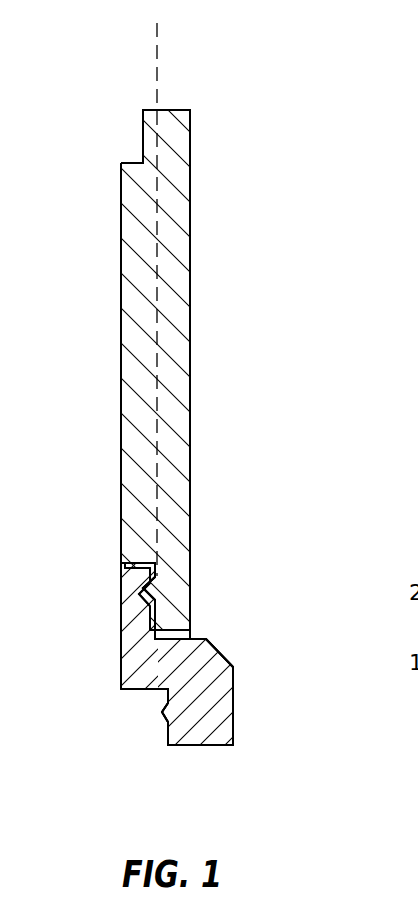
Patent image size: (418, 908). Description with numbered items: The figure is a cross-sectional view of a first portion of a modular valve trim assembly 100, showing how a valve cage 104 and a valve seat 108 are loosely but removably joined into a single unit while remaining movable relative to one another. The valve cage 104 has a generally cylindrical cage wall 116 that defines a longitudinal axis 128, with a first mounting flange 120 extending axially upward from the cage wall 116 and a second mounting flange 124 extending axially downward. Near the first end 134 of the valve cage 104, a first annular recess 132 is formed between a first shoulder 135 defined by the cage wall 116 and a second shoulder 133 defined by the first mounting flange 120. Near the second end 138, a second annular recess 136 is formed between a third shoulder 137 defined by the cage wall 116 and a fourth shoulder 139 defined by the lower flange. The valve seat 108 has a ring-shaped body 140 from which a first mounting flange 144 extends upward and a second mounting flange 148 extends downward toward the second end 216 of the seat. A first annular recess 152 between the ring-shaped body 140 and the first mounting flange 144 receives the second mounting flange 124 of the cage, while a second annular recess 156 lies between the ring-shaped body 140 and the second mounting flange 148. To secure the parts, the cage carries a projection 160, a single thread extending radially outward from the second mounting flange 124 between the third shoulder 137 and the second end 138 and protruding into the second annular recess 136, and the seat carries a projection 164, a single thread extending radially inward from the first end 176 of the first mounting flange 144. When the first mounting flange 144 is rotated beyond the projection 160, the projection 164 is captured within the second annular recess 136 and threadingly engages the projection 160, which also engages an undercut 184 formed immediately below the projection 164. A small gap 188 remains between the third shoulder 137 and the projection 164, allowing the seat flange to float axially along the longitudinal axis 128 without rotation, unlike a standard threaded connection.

The modular valve trim assembly 100 is at (322, 89).
The valve cage 104 is at (157, 360).
The valve seat 108 is at (157, 659).
The cage wall 116 is at (170, 376).
The first mounting flange 120 is at (175, 120).
The second mounting flange 124 is at (178, 604).
The longitudinal axis 128 is at (157, 50).
The first annular recess 132 is at (122, 139).
The second shoulder 133 is at (145, 145).
The first end 134 is at (170, 108).
The first shoulder 135 is at (126, 170).
The second annular recess 136 is at (137, 578).
The third shoulder 137 is at (160, 545).
The second end 138 is at (180, 625).
The fourth shoulder 139 is at (163, 565).
The ring-shaped body 140 is at (177, 670).
The first mounting flange 144 is at (121, 645).
The second mounting flange 148 is at (208, 720).
The first annular recess 152 is at (204, 632).
The second annular recess 156 is at (143, 704).
The projection 160 is at (177, 582).
The projection 164 is at (136, 587).
The first end 176 is at (125, 560).
The undercut 184 is at (140, 598).
The gap 188 is at (124, 563).
The second end 216 is at (200, 772).